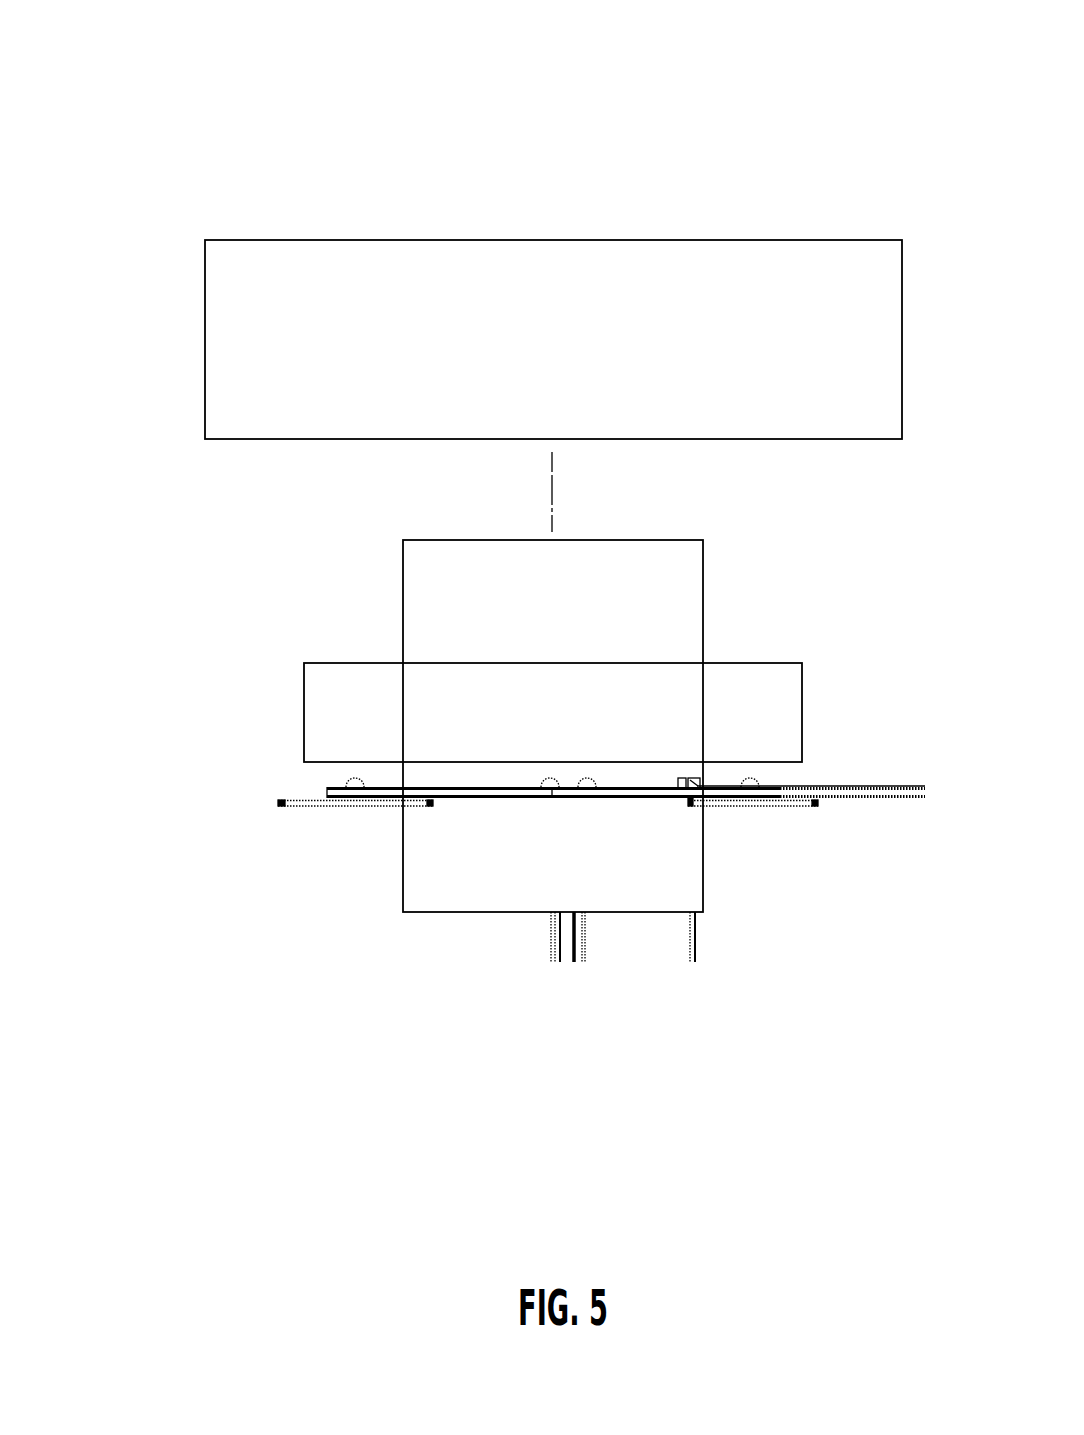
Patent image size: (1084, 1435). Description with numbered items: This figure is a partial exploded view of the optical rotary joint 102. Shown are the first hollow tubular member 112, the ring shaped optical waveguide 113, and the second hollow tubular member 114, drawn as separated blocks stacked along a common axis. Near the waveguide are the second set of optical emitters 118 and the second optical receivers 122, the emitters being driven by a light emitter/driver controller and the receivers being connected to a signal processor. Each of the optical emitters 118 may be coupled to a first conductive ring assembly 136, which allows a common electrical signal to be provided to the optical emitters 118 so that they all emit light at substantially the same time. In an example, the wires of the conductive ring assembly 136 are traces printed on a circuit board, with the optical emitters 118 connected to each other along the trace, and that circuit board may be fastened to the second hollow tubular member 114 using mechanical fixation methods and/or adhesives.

The optical rotary joint 102 is at (160, 79).
The first hollow tubular member 112 is at (423, 606).
The ring shaped optical waveguide 113 is at (321, 724).
The second hollow tubular member 114 is at (338, 275).
The second set of optical emitters 118 is at (347, 779).
The second optical receivers 122 is at (697, 785).
The first conductive ring assembly 136 is at (320, 803).